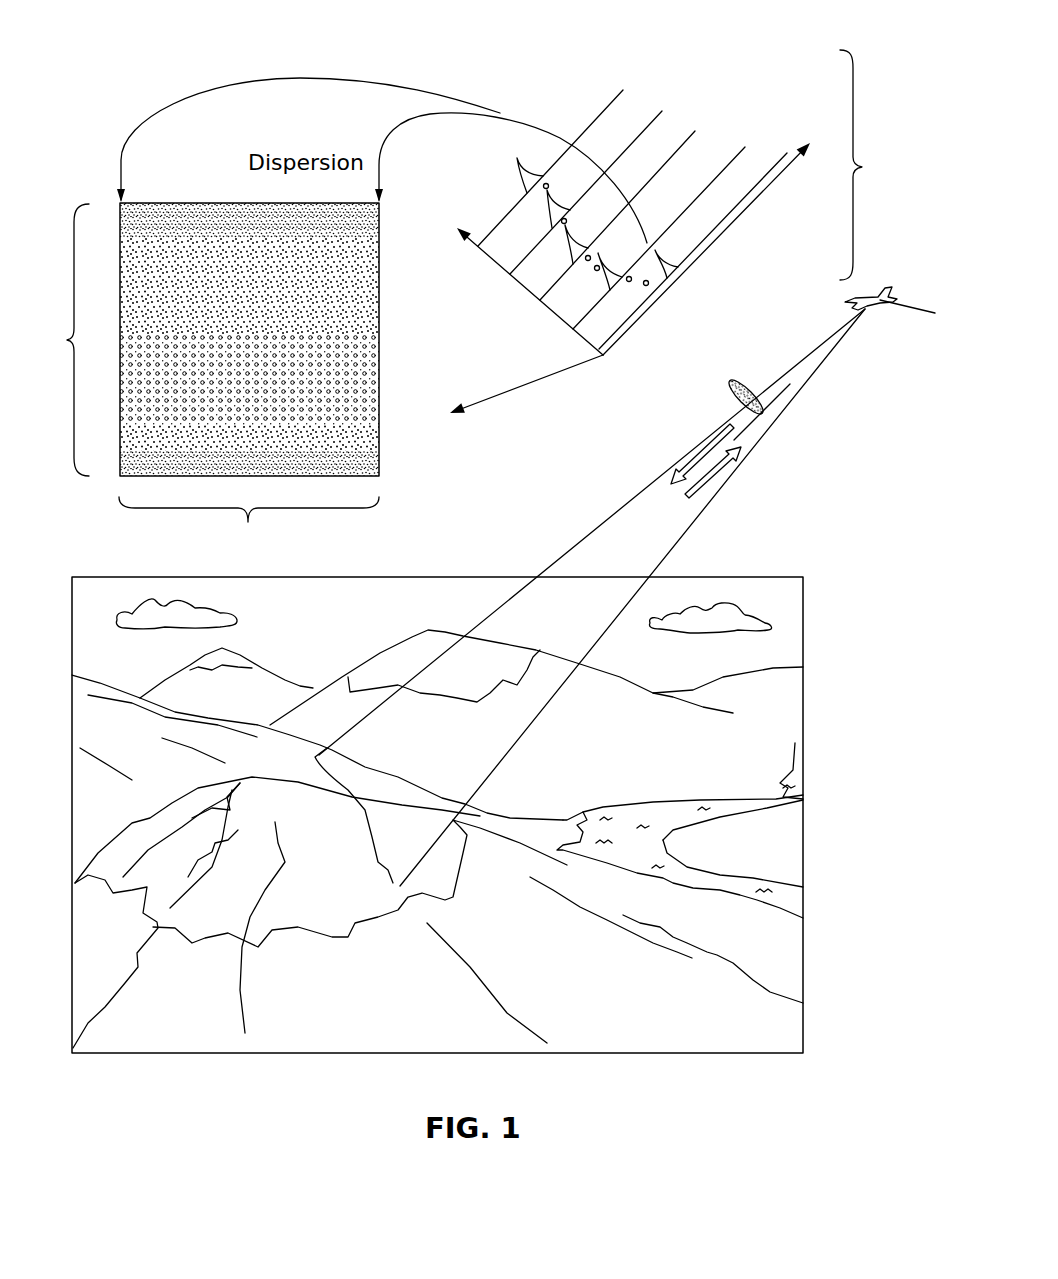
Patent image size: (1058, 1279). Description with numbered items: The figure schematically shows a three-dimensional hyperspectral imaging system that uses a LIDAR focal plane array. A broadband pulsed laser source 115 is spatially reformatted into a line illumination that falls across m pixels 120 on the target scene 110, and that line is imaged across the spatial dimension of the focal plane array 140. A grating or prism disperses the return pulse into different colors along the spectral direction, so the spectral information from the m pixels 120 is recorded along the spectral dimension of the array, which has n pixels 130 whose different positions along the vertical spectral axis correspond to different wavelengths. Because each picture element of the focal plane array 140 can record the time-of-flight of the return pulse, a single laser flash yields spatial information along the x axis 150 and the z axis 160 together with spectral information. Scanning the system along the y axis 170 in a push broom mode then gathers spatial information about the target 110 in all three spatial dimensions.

The target scene 110 is at (803, 860).
The broadband pulsed laser source 115 is at (739, 378).
The m pixels 120 is at (249, 379).
The n pixels 130 is at (60, 340).
The focal plane array 140 is at (694, 199).
The x axis 150 is at (458, 228).
The z axis 160 is at (806, 204).
The y axis 170 is at (620, 388).